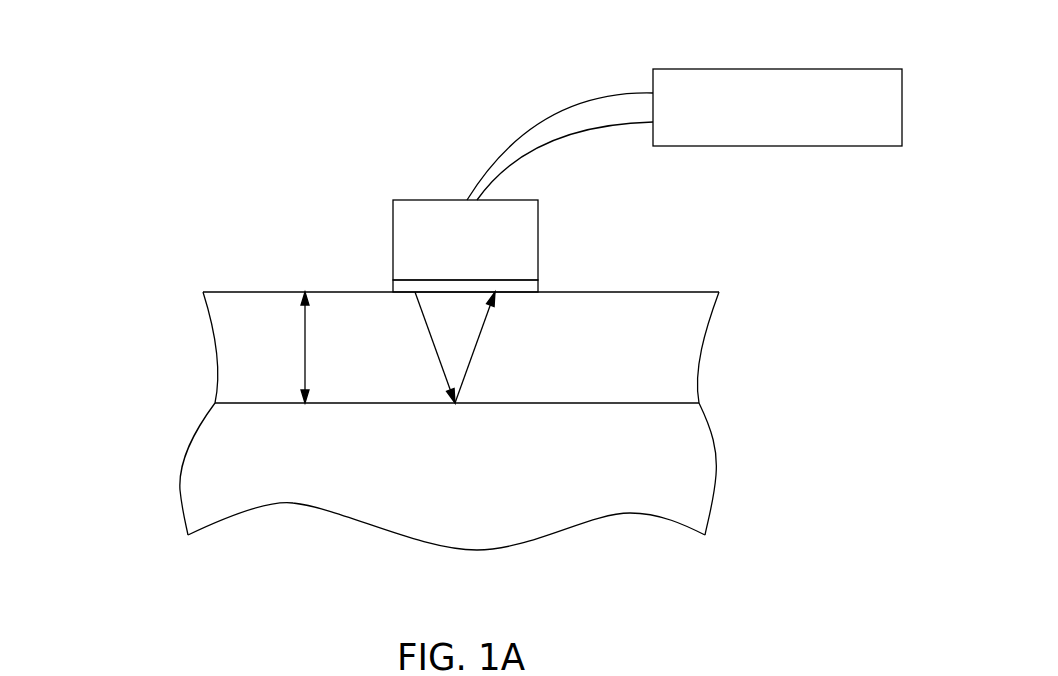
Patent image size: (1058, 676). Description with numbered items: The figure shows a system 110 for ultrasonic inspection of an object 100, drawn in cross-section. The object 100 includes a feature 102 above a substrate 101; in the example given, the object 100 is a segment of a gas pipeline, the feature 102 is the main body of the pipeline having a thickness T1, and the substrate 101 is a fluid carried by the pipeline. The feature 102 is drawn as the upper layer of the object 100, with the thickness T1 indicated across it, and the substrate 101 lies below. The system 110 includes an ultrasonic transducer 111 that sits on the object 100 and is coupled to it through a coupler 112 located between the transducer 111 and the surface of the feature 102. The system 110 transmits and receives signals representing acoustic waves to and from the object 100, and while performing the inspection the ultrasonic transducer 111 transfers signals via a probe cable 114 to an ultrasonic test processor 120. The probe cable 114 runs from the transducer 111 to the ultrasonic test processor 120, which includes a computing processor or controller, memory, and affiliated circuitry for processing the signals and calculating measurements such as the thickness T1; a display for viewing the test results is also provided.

The object 100 is at (148, 288).
The substrate 101 is at (702, 472).
The feature 102 is at (686, 350).
The system 110 is at (444, 183).
The ultrasonic transducer 111 is at (531, 235).
The coupler 112 is at (529, 288).
The probe cable 114 is at (545, 118).
The ultrasonic test processor 120 is at (795, 69).
The thickness T1 is at (308, 347).